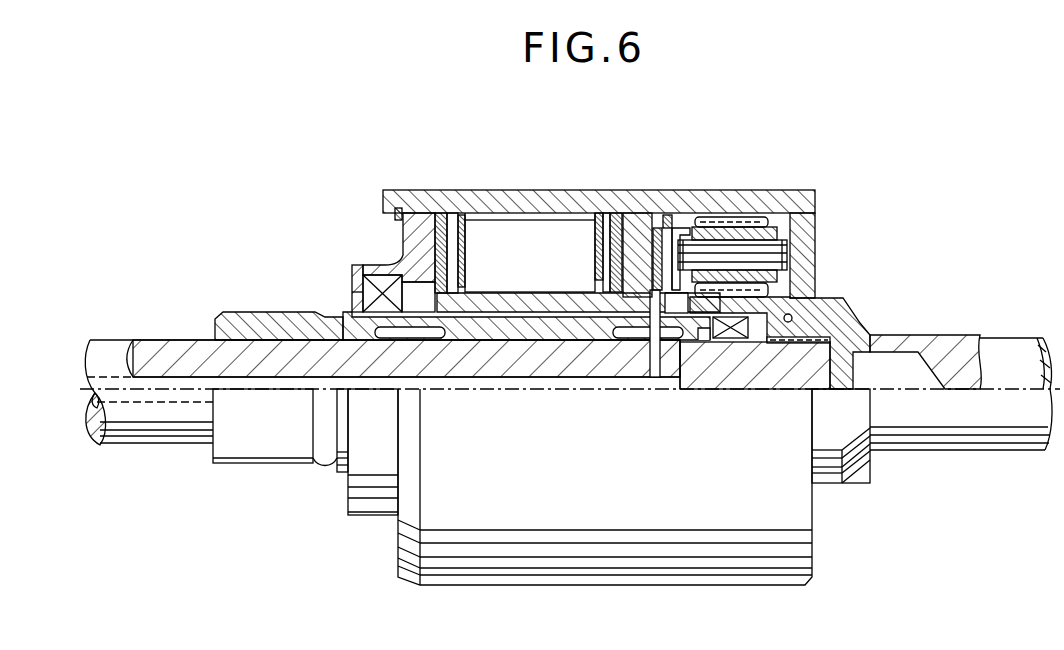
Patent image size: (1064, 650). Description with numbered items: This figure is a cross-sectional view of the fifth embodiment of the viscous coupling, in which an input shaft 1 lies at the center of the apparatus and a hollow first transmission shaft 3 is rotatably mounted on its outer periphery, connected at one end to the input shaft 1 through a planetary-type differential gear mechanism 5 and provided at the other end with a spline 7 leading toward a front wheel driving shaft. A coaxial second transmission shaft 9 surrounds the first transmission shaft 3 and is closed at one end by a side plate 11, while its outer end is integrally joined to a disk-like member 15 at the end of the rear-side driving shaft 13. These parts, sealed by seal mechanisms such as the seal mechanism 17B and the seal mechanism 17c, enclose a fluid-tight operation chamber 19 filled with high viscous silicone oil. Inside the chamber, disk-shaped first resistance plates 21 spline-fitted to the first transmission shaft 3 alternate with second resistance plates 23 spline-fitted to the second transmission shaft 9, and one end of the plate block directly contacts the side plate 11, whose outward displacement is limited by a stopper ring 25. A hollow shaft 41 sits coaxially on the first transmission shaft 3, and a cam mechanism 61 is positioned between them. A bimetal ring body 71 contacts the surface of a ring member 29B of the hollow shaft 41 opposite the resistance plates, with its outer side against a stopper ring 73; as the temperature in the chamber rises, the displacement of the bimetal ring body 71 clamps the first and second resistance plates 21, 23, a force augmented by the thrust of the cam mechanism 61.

The input shaft 1 is at (168, 350).
The first transmission shaft 3 is at (323, 313).
The differential gear mechanism 5 is at (773, 217).
The spline 7 is at (243, 316).
The second transmission shaft 9 is at (431, 205).
The side plate 11 is at (403, 253).
The rear-side driving shaft 13 is at (920, 338).
The disk-like member 15 is at (808, 231).
The seal mechanism 17B is at (350, 306).
The seal mechanism 17c is at (762, 326).
The operation chamber 19 is at (410, 285).
The first resistance plates 21 is at (465, 217).
The second resistance plates 23 is at (450, 215).
The stopper ring 25 is at (395, 213).
The ring member 29B is at (640, 237).
The hollow shaft 41 is at (545, 302).
The cam mechanism 61 is at (680, 313).
The bimetal ring body 71 is at (658, 228).
The stopper ring 73 is at (673, 226).